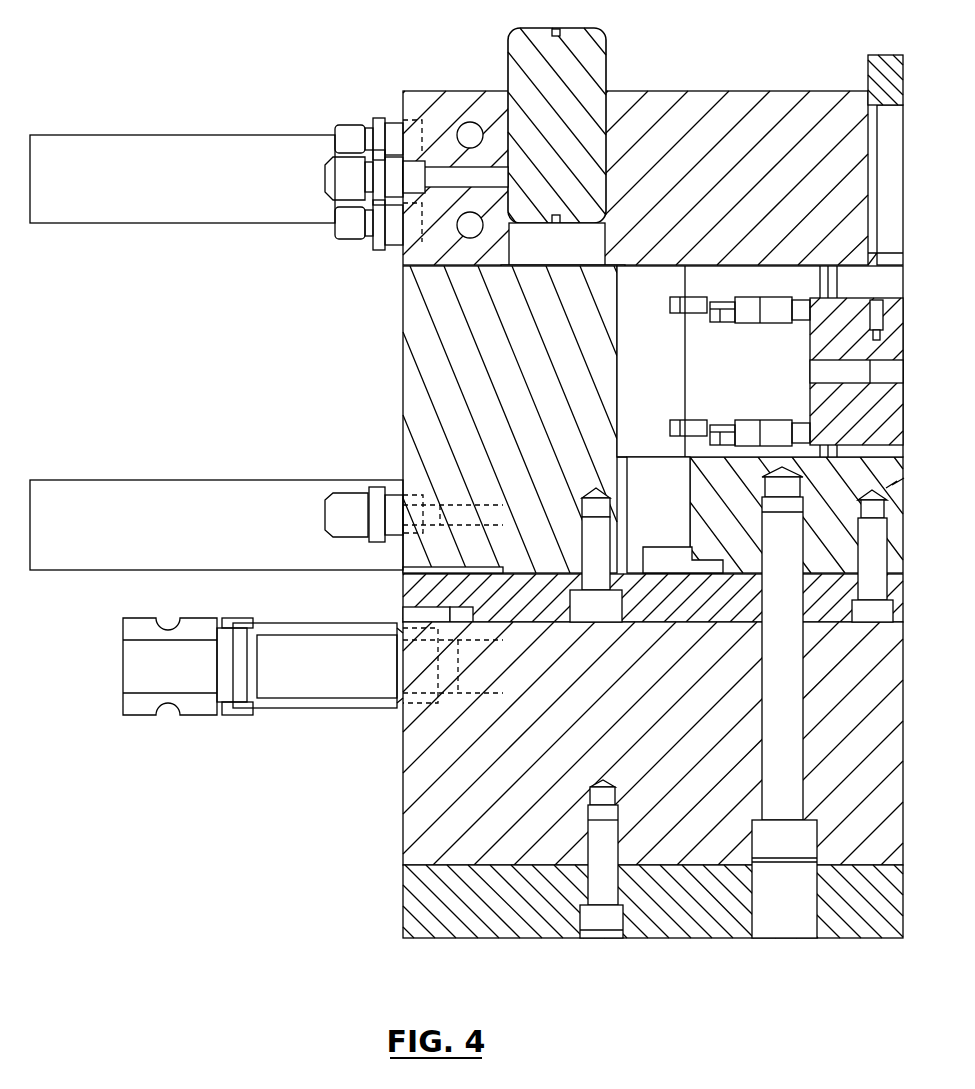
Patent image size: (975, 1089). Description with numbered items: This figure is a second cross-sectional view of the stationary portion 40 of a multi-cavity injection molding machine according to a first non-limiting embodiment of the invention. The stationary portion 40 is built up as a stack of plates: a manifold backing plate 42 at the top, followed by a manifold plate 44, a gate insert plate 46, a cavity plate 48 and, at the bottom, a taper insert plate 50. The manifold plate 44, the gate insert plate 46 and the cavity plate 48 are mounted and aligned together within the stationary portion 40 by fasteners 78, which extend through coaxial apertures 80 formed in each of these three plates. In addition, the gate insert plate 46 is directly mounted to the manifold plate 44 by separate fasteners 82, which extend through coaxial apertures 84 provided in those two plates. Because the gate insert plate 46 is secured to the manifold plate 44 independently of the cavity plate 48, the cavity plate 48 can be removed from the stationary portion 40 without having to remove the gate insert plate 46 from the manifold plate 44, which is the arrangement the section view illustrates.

The stationary portion 40 is at (215, 813).
The manifold backing plate 42 is at (402, 102).
The manifold plate 44 is at (403, 345).
The gate insert plate 46 is at (403, 588).
The cavity plate 48 is at (403, 770).
The taper insert plate 50 is at (407, 902).
The fasteners 78 is at (775, 848).
The coaxial apertures 80 is at (805, 790).
The fasteners 82 is at (560, 540).
The coaxial apertures 84 is at (583, 543).